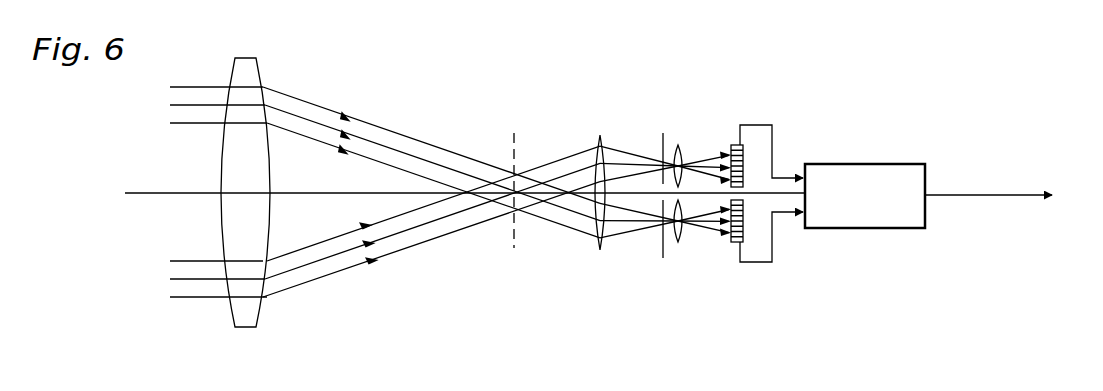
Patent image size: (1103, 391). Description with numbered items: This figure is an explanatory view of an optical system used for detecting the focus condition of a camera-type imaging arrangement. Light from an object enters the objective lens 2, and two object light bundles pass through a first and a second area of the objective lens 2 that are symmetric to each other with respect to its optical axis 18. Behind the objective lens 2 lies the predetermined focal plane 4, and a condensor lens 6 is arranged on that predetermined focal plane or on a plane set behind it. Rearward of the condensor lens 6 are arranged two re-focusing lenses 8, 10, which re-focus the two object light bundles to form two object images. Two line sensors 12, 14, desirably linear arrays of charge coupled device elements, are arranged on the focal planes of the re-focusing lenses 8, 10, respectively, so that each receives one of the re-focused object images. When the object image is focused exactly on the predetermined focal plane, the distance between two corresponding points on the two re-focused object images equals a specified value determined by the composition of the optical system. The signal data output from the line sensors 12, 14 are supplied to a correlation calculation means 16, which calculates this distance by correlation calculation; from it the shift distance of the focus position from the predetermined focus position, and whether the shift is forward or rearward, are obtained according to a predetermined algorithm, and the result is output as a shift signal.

The objective lens 2 is at (245, 313).
The focal plane / image plane 4 is at (513, 238).
The condensor lens 6 is at (598, 246).
The re-focusing lens 8 is at (679, 144).
The re-focusing lens 10 is at (678, 247).
The line sensor 12 is at (741, 148).
The line sensor 14 is at (744, 222).
The correlation calculation means 16 is at (862, 164).
The optical axis 18 is at (170, 193).